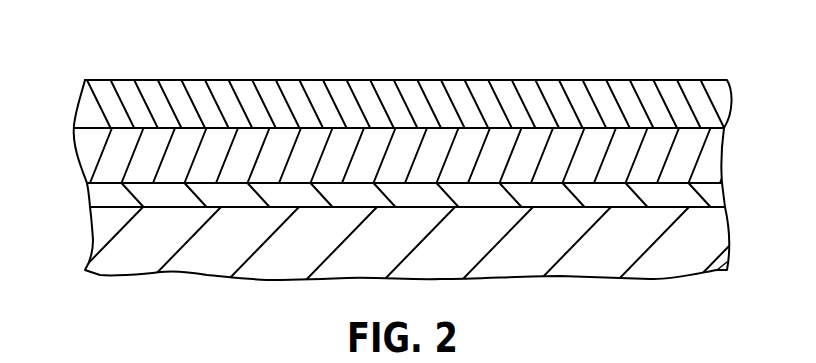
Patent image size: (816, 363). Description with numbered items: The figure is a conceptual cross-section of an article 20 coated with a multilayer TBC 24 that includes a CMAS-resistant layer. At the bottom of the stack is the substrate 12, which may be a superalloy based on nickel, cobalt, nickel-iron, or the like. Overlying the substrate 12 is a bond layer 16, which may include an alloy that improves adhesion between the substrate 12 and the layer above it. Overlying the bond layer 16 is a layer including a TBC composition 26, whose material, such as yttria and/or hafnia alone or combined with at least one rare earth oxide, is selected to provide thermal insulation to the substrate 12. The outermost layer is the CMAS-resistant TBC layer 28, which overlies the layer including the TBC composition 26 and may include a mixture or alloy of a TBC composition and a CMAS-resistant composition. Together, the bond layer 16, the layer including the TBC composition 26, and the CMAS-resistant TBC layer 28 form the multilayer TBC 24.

The article 20 is at (63, 43).
The multilayer TBC 24 is at (748, 80).
The CMAS-resistant TBC layer 28 is at (97, 106).
The layer including a TBC composition 26 is at (97, 158).
The bond layer 16 is at (104, 196).
The substrate 12 is at (104, 240).